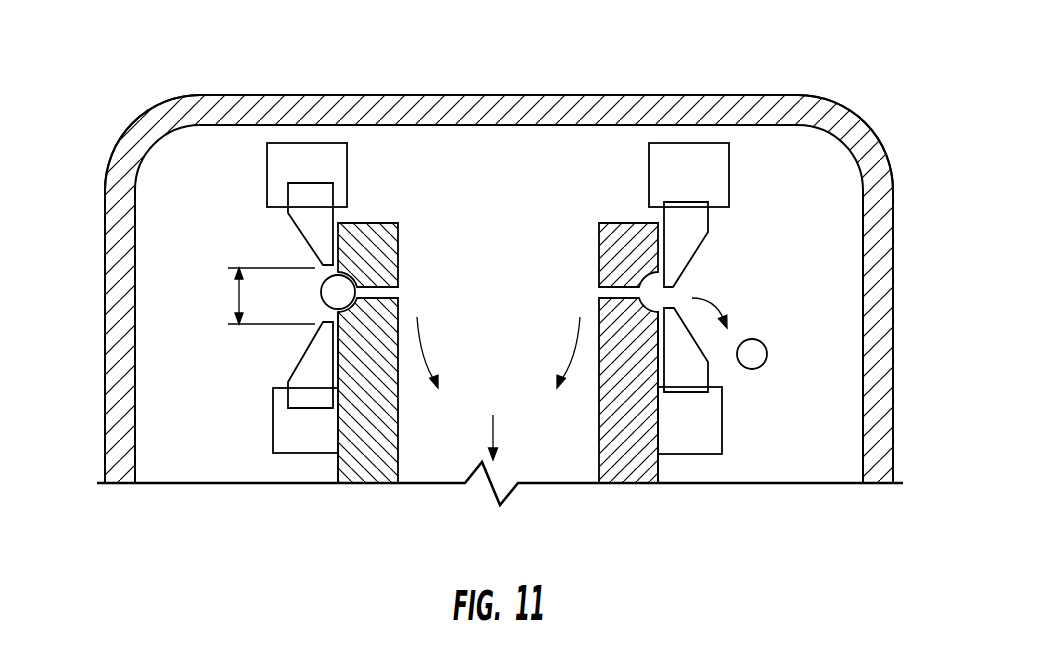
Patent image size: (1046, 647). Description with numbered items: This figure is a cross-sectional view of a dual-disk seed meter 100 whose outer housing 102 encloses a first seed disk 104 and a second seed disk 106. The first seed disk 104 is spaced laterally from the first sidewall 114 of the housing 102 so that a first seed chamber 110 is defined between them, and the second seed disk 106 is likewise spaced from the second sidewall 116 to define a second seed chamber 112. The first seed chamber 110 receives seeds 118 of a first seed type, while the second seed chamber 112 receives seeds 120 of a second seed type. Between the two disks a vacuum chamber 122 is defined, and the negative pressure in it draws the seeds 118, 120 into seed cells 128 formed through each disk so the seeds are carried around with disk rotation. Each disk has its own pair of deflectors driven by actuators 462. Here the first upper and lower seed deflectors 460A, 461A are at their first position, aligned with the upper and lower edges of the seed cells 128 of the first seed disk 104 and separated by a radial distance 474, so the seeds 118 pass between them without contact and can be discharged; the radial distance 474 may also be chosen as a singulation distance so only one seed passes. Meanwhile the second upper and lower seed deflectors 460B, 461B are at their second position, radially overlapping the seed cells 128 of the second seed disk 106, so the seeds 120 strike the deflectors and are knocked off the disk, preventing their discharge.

The seed meter 100 is at (96, 92).
The outer housing 102 is at (858, 111).
The first seed disk 104 is at (333, 466).
The second seed disk 106 is at (663, 466).
The first seed chamber 110 is at (218, 467).
The second seed chamber 112 is at (829, 470).
The first sidewall 114 is at (115, 362).
The second sidewall 116 is at (887, 370).
The seeds of a first seed type 118 is at (327, 292).
The seeds of a second seed type 120 is at (762, 357).
The vacuum chamber 122 is at (513, 402).
The seed cells 128 is at (380, 282).
The first upper seed deflector 460A is at (296, 225).
The second upper seed deflector 460B is at (720, 227).
The first lower seed deflector 461A is at (302, 360).
The second lower seed deflector 461B is at (677, 315).
The actuator 462 is at (337, 168).
The radial distance 474 is at (237, 300).